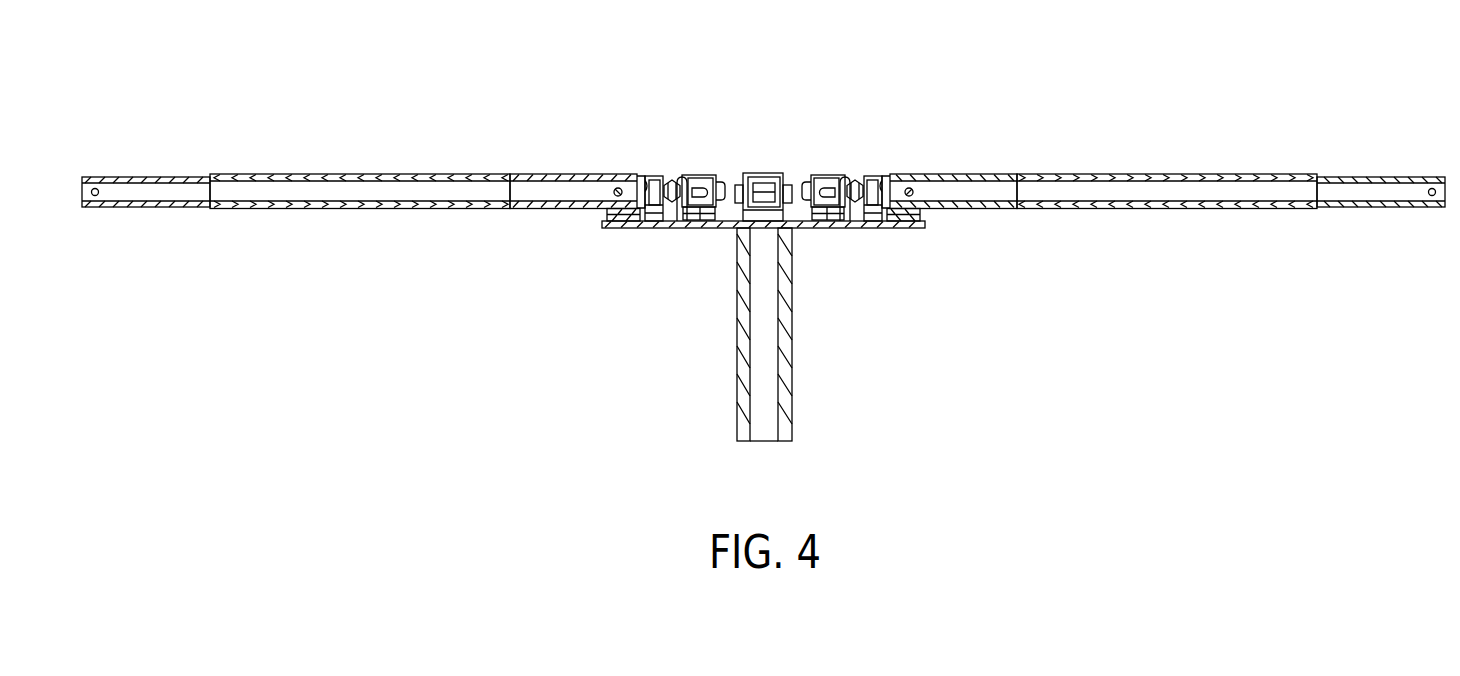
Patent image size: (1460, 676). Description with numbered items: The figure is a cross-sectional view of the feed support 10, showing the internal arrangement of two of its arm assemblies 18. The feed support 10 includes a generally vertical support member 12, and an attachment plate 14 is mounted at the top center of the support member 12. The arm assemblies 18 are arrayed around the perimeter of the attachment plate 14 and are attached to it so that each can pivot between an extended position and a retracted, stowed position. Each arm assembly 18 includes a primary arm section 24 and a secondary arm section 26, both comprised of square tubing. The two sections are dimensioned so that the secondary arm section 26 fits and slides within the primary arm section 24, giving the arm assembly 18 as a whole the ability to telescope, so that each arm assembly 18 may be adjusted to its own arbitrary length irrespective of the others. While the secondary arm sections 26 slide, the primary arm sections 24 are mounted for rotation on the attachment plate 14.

The feed support 10 is at (782, 96).
The support member 12 is at (792, 305).
The attachment plate 14 is at (858, 228).
The arm assembly 18 is at (509, 170).
The primary arm section 24 is at (300, 174).
The secondary arm section 26 is at (136, 177).